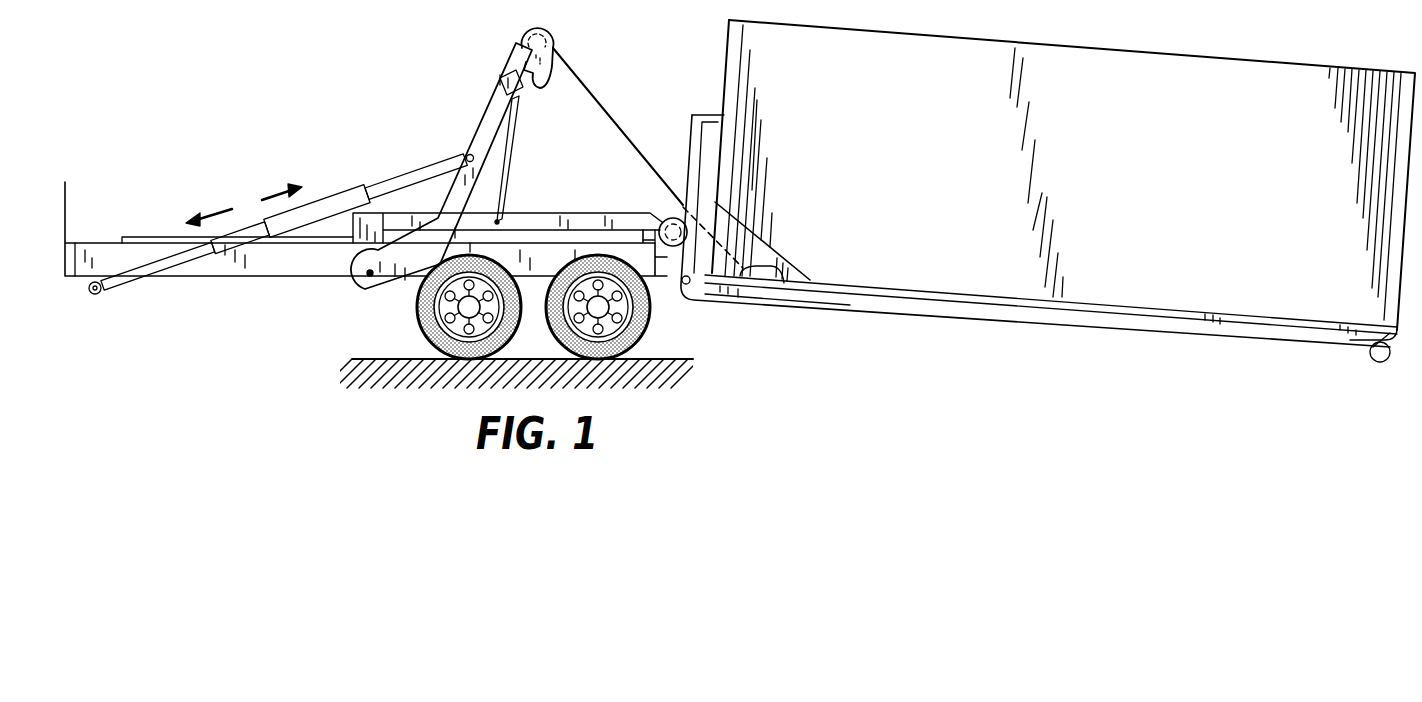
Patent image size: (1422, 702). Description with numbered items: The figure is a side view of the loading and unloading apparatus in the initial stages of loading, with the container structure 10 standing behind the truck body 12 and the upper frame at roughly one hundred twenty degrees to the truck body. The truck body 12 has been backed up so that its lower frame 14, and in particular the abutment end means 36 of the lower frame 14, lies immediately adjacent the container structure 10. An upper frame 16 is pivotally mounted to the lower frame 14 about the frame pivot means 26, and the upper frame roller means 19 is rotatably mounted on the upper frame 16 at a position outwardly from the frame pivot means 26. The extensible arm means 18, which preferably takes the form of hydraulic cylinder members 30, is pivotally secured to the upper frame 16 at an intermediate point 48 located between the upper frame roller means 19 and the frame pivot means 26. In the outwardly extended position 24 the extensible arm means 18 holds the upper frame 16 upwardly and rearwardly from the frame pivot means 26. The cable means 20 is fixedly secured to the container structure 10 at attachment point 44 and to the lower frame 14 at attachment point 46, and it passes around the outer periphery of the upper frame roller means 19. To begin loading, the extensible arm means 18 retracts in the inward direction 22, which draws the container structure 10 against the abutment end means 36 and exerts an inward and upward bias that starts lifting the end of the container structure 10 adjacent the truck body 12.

The container structure 10 is at (1059, 186).
The truck body 12 is at (307, 278).
The lower frame 14 is at (557, 220).
The upper frame 16 is at (488, 110).
The extensible arm means 18 is at (316, 208).
The upper frame roller means 19 is at (520, 43).
The cable means 20 is at (592, 92).
The inward direction 22 is at (209, 208).
The outwardly extended position 24 is at (280, 183).
The frame pivot means 26 is at (372, 277).
The hydraulic cylinder member 30 is at (133, 283).
The abutment end means 36 is at (668, 213).
The attachment point 44 is at (783, 283).
The attachment point 46 is at (503, 221).
The intermediate point 48 is at (468, 155).